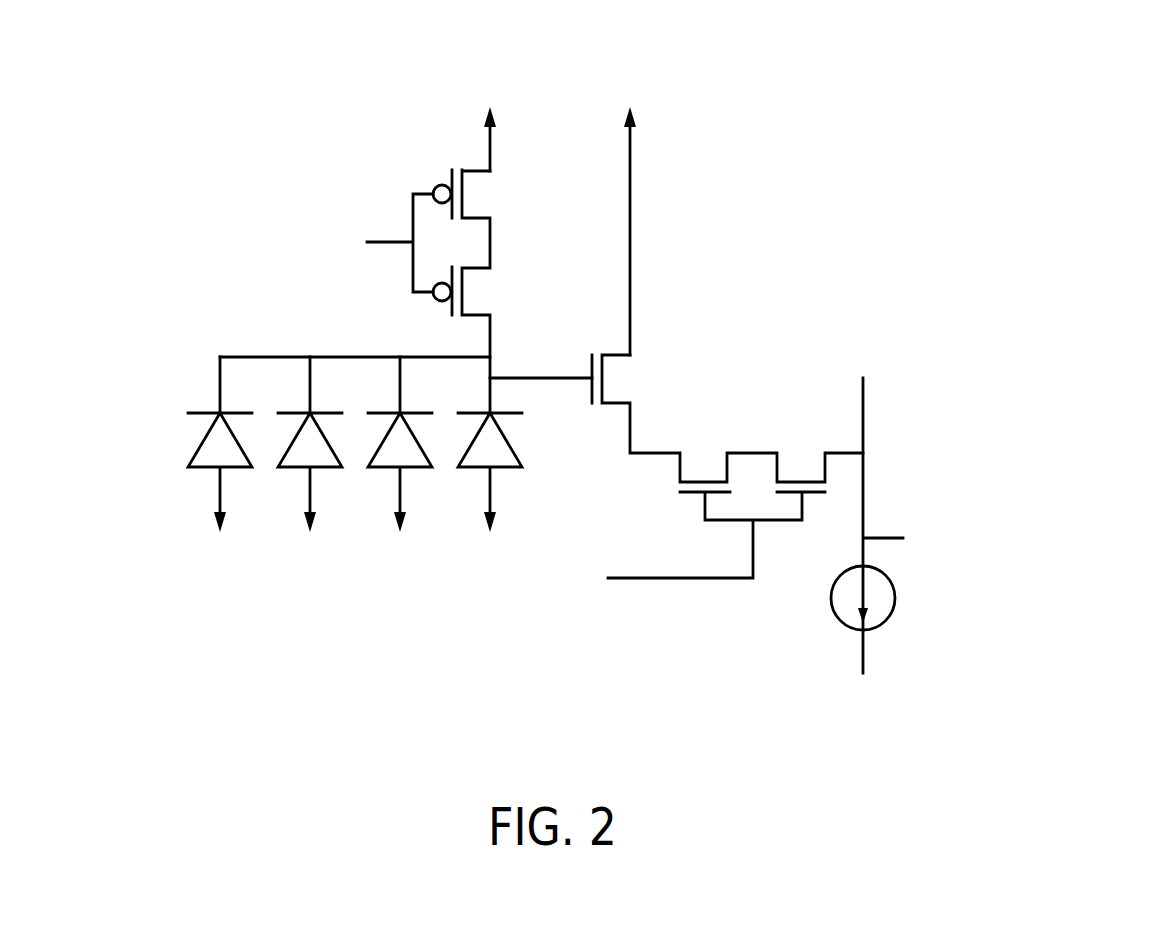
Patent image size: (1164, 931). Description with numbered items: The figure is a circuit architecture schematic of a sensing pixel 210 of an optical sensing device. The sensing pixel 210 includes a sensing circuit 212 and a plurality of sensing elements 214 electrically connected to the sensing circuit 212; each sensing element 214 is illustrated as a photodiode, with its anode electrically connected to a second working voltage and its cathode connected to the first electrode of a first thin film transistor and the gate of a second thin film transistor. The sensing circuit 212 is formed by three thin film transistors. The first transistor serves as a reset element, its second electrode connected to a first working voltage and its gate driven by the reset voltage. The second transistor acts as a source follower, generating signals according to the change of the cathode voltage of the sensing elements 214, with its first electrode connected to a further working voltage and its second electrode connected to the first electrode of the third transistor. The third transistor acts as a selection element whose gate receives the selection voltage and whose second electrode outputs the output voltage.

The sensing pixel 210 is at (620, 373).
The sensing circuit 212 is at (387, 185).
The sensing element 214 is at (205, 457).